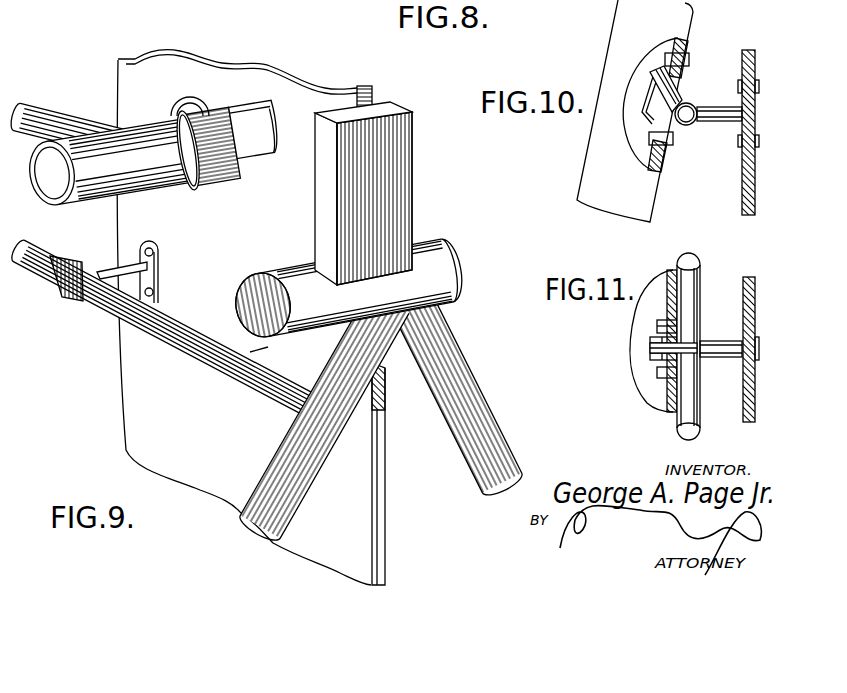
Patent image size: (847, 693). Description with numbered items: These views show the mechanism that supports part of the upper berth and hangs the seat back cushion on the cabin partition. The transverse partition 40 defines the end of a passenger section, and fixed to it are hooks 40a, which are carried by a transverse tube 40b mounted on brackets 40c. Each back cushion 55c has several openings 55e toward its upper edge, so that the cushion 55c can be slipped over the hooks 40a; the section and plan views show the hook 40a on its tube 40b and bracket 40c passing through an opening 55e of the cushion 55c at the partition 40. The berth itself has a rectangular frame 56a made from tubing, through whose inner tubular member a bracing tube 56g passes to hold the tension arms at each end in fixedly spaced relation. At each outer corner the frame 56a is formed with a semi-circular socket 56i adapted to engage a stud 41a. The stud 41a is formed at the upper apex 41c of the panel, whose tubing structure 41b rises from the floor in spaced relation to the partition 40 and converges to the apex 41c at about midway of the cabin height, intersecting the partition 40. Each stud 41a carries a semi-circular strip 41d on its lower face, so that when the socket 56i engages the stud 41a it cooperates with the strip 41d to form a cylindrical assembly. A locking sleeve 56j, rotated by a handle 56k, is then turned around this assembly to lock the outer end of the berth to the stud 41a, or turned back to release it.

In FIG. 9, the transverse partition 40 is at (251, 317).
In FIG. 10, the transverse partition 40 is at (742, 200).
In FIG. 11, the transverse partition 40 is at (758, 318).
In FIG. 9, the hooks 40a is at (58, 258).
In FIG. 10, the hooks 40a is at (684, 92).
In FIG. 11, the hooks 40a is at (690, 343).
In FIG. 9, the transverse tube 40b is at (170, 310).
In FIG. 10, the transverse tube 40b is at (688, 126).
In FIG. 11, the transverse tube 40b is at (697, 283).
In FIG. 9, the brackets 40c is at (153, 280).
In FIG. 10, the brackets 40c is at (698, 104).
In FIG. 11, the brackets 40c is at (713, 362).
In FIG. 9, the stud 41a is at (278, 270).
In FIG. 9, the tubing structure 41b is at (460, 466).
In FIG. 9, the apex 41c is at (430, 313).
In FIG. 9, the semi-circular strip 41d is at (263, 356).
In FIG. 10, the back cushion 55c is at (635, 111).
In FIG. 11, the back cushion 55c is at (667, 409).
In FIG. 10, the openings 55e is at (637, 145).
In FIG. 11, the openings 55e is at (652, 362).
In FIG. 9, the frame 56a is at (110, 164).
In FIG. 9, the bracing tube 56g is at (141, 193).
In FIG. 9, the semi-circular socket 56i is at (252, 158).
In FIG. 9, the locking sleeve 56j is at (218, 193).
In FIG. 9, the handle 56k is at (206, 99).